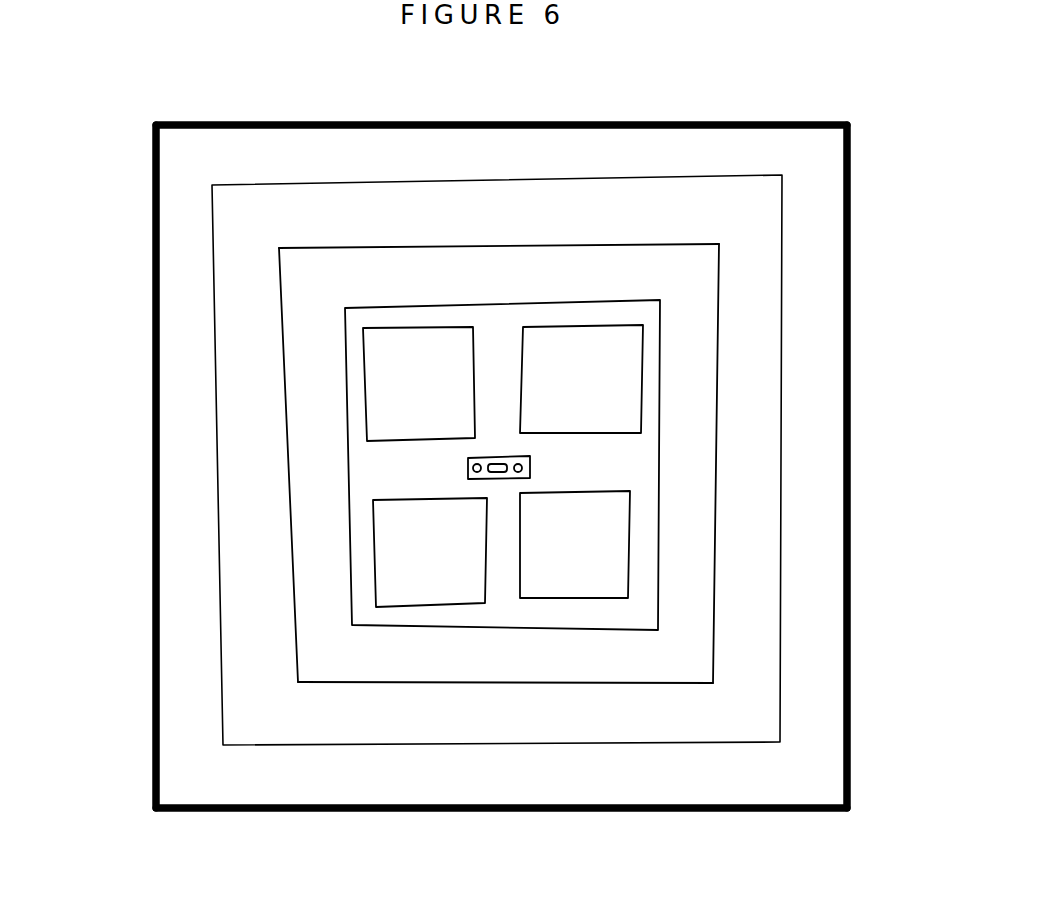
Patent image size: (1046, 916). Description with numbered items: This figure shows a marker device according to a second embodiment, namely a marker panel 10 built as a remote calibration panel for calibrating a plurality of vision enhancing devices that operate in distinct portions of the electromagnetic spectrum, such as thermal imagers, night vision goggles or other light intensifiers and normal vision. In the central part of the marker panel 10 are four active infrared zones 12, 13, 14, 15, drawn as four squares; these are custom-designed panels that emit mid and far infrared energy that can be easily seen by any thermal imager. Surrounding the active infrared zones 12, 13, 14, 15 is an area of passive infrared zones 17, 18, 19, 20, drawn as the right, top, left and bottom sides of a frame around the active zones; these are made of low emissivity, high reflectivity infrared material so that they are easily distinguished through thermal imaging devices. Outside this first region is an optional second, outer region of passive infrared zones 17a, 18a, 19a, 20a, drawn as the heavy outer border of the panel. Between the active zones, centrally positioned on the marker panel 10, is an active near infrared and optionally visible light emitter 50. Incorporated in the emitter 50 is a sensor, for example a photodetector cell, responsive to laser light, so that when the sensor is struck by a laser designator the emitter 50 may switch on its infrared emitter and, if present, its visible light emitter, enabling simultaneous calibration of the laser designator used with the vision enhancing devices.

The marker panel 10 is at (768, 97).
The active infrared zone 12 is at (430, 402).
The active infrared zone 13 is at (598, 392).
The active infrared zone 14 is at (440, 571).
The active infrared zone 15 is at (590, 566).
The passive infrared zone 17 is at (697, 457).
The outer passive infrared zone 17a is at (820, 462).
The passive infrared zone 18 is at (513, 267).
The outer passive infrared zone 18a is at (537, 143).
The passive infrared zone 19 is at (308, 455).
The outer passive infrared zone 19a is at (175, 484).
The passive infrared zone 20 is at (513, 665).
The outer passive infrared zone 20a is at (513, 795).
The active near infrared emitter 50 is at (532, 466).